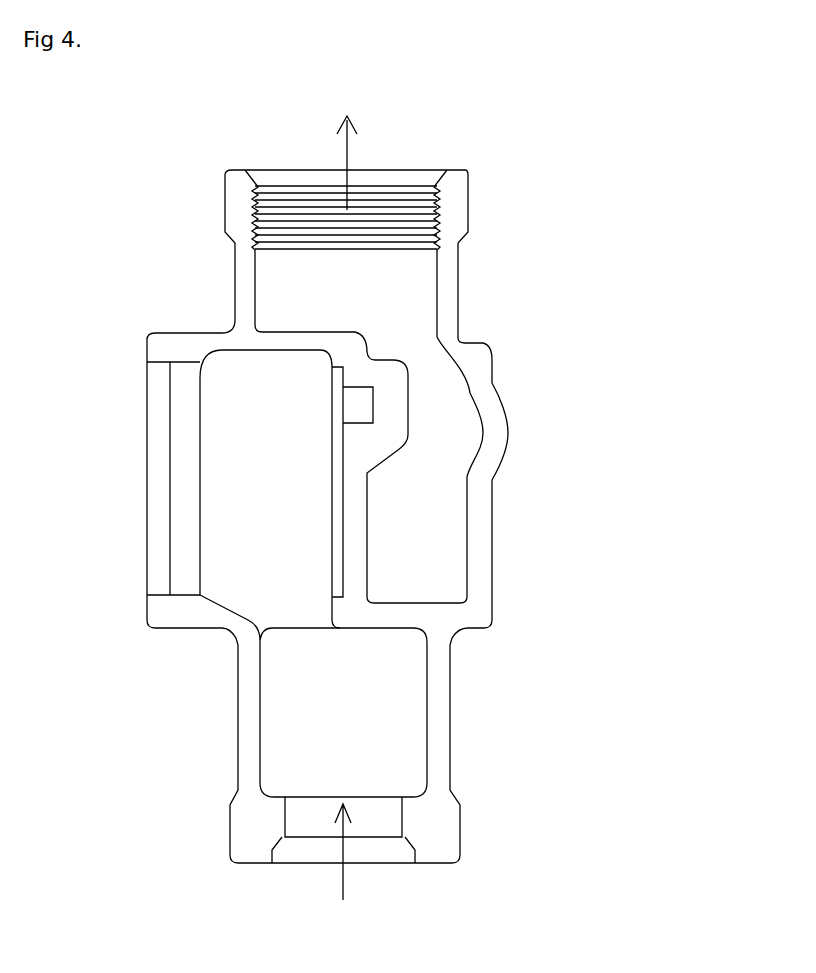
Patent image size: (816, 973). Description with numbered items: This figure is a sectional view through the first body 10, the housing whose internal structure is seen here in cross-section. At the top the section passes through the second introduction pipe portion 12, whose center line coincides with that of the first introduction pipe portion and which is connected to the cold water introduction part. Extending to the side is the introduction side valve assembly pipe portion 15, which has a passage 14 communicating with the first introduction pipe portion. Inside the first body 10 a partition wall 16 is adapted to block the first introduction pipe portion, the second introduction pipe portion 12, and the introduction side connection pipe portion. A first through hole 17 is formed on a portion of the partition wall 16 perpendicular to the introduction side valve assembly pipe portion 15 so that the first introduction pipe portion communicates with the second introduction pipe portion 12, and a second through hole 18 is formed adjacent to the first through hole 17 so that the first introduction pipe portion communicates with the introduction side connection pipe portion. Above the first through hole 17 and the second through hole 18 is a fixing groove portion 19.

The first body 10 is at (612, 306).
The second introduction pipe portion 12 is at (458, 292).
The passage 14 is at (305, 630).
The introduction side valve assembly pipe portion 15 is at (167, 613).
The partition wall 16 is at (367, 530).
The first through hole 17 is at (487, 489).
The second through hole 18 is at (353, 590).
The fixing groove portion 19 is at (352, 402).